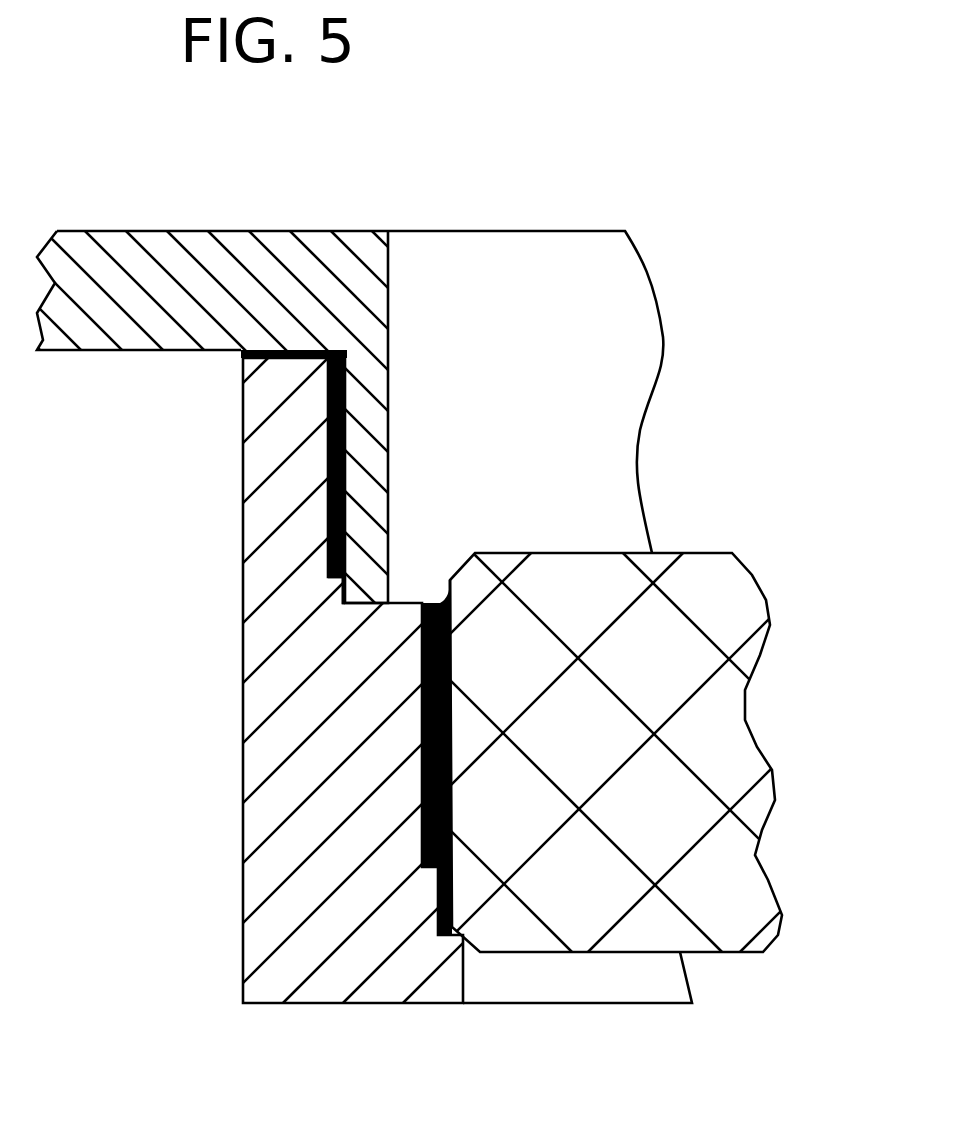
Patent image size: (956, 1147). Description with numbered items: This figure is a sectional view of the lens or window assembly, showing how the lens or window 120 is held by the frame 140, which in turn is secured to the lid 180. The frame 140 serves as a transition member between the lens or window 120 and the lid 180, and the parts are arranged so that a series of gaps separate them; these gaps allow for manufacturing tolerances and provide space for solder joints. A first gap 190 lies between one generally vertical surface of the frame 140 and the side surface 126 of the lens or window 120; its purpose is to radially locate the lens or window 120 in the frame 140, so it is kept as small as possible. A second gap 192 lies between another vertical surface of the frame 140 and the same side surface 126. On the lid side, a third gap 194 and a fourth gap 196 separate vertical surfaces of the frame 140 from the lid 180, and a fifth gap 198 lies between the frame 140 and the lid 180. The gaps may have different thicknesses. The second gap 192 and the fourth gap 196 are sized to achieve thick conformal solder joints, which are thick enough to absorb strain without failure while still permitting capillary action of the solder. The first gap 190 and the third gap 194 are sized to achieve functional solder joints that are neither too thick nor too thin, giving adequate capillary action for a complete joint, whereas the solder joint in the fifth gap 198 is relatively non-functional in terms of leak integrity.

The lens or window 120 is at (698, 553).
The side surface 126 is at (452, 673).
The frame 140 is at (243, 926).
The lid 180 is at (206, 231).
The first gap 190 is at (438, 908).
The second gap 192 is at (422, 720).
The third gap 194 is at (350, 592).
The fourth gap 196 is at (350, 418).
The fifth gap 198 is at (280, 350).